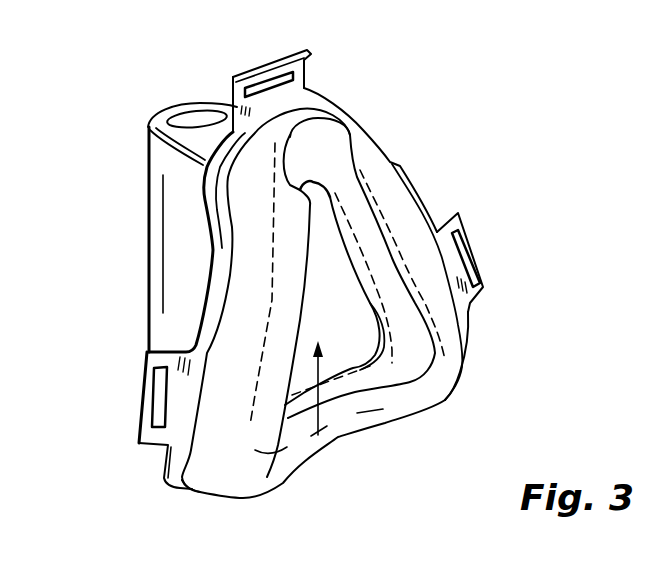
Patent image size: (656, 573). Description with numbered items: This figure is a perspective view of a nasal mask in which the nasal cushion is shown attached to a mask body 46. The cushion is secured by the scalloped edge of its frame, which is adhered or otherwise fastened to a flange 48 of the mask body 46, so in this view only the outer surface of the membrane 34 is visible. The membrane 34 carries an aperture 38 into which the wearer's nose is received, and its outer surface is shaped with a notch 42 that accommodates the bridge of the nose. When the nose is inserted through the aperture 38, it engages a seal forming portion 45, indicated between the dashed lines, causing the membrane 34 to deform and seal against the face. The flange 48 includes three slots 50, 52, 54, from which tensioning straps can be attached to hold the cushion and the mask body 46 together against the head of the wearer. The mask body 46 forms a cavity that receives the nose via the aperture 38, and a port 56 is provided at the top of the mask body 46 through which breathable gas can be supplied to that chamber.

The membrane 34 is at (470, 340).
The aperture 38 is at (318, 435).
The notch 42 is at (313, 158).
The seal forming portion 45 is at (412, 400).
The mask body 46 is at (167, 220).
The flange 48 is at (137, 443).
The slot 50 is at (467, 247).
The slot 52 is at (262, 80).
The slot 54 is at (160, 387).
The port 56 is at (192, 113).